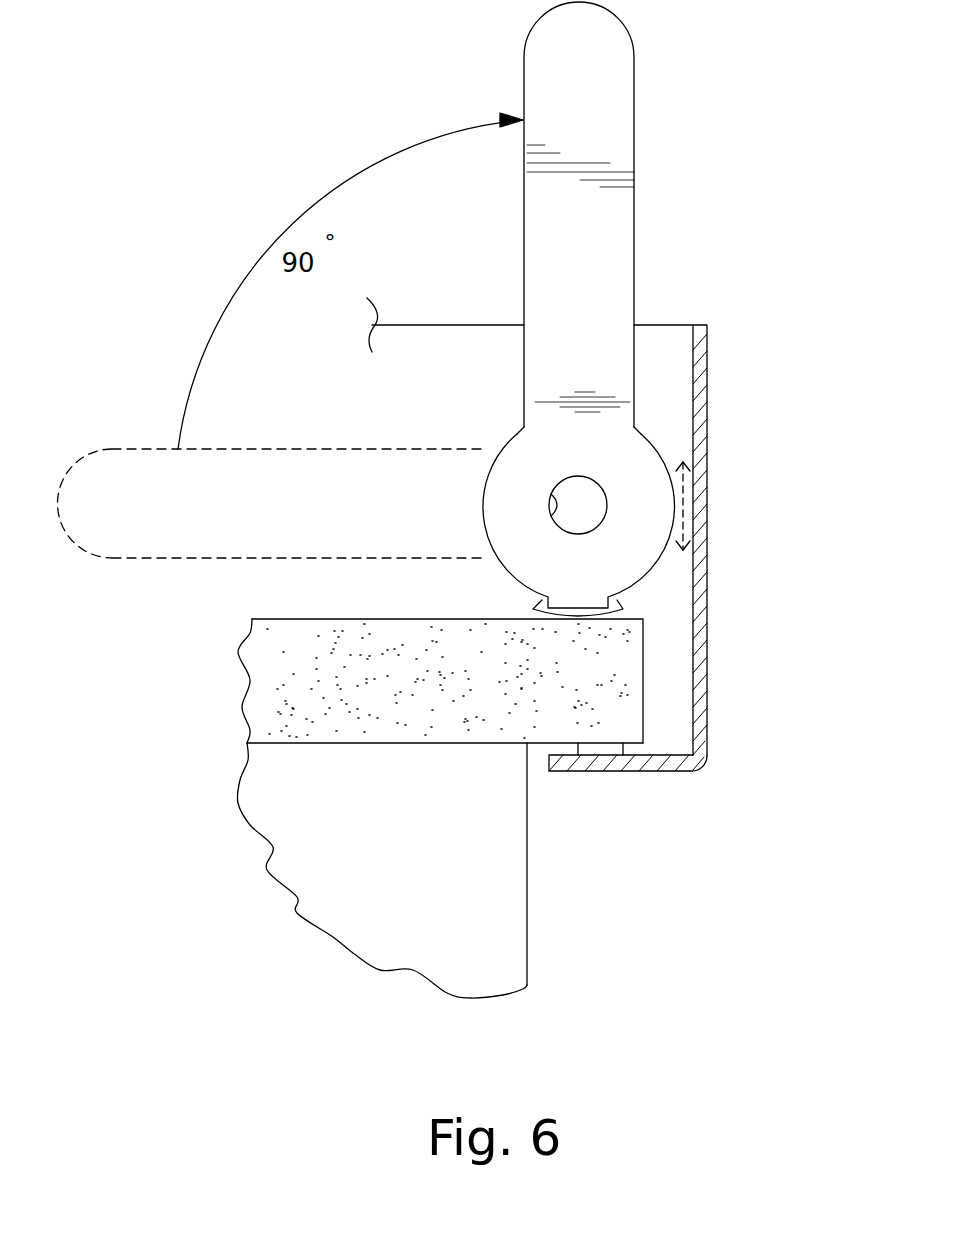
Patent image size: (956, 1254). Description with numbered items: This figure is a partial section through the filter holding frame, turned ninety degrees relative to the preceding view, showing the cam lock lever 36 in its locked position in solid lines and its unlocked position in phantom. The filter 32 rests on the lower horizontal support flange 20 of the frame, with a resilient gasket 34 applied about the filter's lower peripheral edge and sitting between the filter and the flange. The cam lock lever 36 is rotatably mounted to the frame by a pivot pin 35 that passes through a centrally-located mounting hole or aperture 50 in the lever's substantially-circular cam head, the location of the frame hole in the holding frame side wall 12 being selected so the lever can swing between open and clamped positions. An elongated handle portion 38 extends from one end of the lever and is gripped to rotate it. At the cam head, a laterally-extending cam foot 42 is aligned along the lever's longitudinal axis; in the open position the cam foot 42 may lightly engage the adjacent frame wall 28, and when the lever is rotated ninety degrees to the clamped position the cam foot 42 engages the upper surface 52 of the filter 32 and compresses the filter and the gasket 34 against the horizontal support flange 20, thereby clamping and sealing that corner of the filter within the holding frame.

The holding frame side wall 12 is at (448, 362).
The lower horizontal support flange 20 is at (632, 763).
The wall 28 is at (680, 358).
The filter 32 is at (231, 778).
The resilient gasket 34 is at (597, 750).
The pivot pin 35 is at (583, 497).
The cam lock lever 36 is at (672, 107).
The handle portion 38 is at (548, 231).
The cam foot 42 is at (585, 607).
The mounting hole or aperture 50 is at (548, 492).
The upper surface of the filter 52 is at (272, 618).